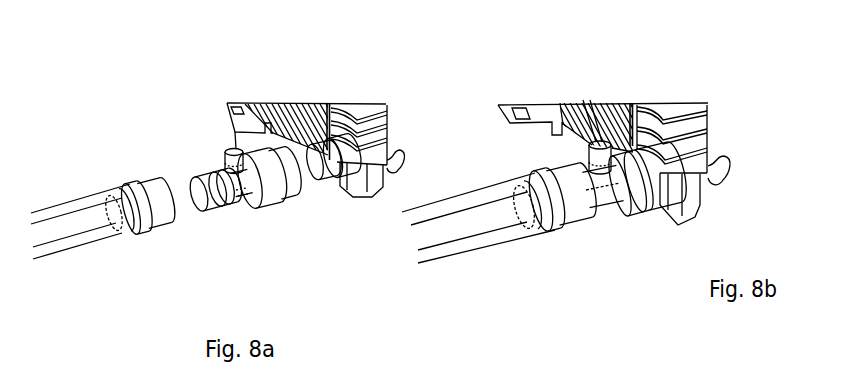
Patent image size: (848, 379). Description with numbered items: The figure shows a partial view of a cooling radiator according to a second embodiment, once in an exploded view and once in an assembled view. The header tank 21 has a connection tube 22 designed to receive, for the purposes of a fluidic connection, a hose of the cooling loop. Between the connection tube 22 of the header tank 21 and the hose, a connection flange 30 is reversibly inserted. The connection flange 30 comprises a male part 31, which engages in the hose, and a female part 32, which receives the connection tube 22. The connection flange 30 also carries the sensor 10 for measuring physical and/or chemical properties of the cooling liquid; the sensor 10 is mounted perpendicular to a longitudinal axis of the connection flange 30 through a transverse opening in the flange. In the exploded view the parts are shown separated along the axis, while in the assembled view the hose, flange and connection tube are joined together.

In FIG. 8A, the sensor 10 is at (216, 141).
In FIG. 8B, the sensor 10 is at (600, 142).
In FIG. 8A, the header tank 21 is at (362, 102).
In FIG. 8B, the header tank 21 is at (708, 112).
In FIG. 8A, the connection tube 22 is at (328, 131).
In FIG. 8A, the connection flange 30 is at (219, 181).
In FIG. 8B, the connection flange 30 is at (630, 218).
In FIG. 8A, the male part 31 is at (287, 203).
In FIG. 8A, the female part 32 is at (203, 216).